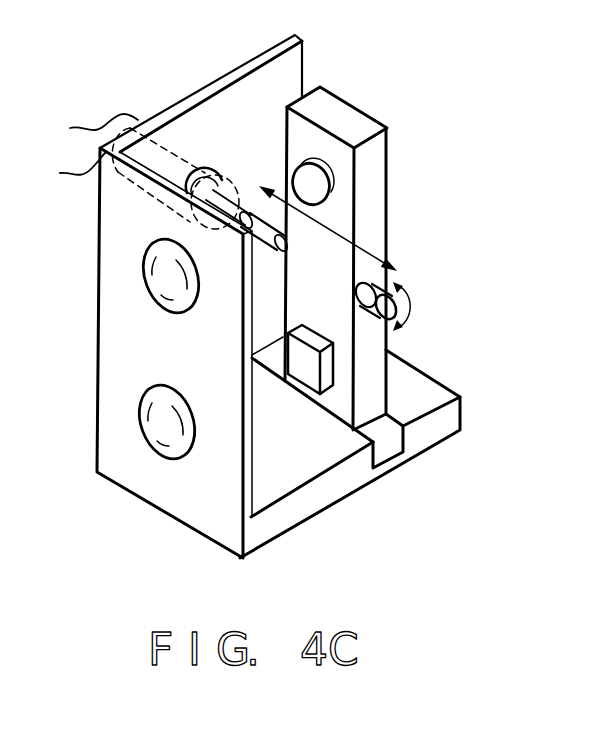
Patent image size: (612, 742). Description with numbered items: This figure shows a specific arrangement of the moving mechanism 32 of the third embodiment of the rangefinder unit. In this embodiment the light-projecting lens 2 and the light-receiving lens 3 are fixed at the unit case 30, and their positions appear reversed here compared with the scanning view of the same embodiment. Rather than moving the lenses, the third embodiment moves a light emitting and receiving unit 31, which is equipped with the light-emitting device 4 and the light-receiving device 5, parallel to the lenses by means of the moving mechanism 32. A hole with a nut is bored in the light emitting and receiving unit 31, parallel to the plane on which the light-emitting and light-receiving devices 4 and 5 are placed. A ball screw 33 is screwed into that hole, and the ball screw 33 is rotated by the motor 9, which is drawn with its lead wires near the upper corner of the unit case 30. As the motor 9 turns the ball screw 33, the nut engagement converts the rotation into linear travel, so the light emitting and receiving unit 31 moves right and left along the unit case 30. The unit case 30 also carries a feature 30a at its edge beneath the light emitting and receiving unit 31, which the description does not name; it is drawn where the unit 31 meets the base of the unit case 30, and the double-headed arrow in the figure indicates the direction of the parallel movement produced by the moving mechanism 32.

The light-projecting lens 2 is at (153, 292).
The light-receiving lens 3 is at (182, 461).
The light-emitting device 4 is at (333, 178).
The light-receiving device 5 is at (318, 333).
The motor 9 is at (150, 196).
The unit case 30 is at (450, 437).
The notch 30a is at (400, 458).
The light emitting and receiving unit 31 is at (386, 226).
The moving mechanism 32 is at (233, 132).
The ball screw 33 is at (404, 298).